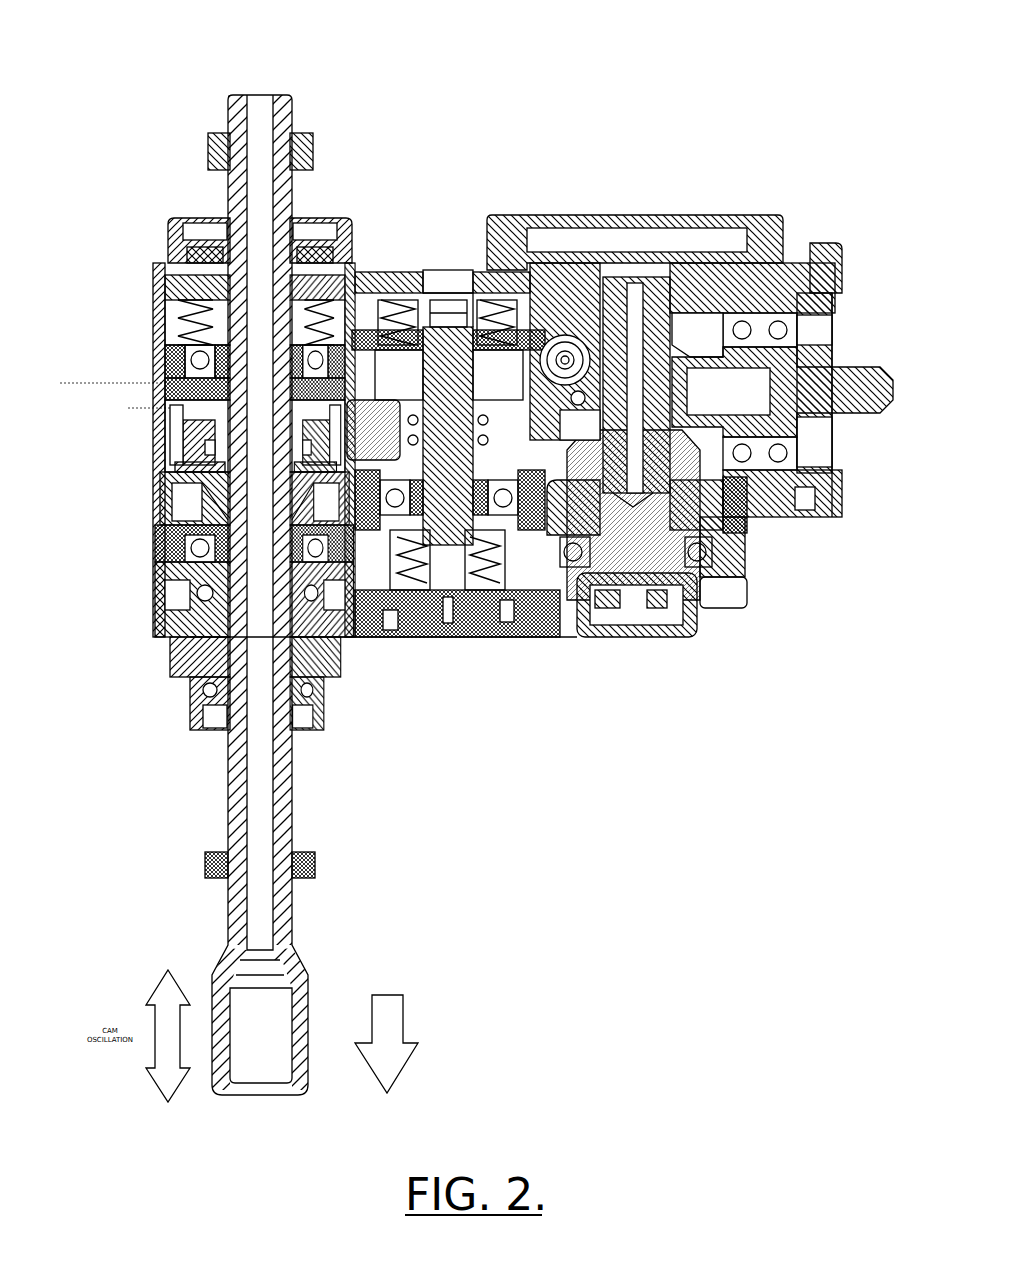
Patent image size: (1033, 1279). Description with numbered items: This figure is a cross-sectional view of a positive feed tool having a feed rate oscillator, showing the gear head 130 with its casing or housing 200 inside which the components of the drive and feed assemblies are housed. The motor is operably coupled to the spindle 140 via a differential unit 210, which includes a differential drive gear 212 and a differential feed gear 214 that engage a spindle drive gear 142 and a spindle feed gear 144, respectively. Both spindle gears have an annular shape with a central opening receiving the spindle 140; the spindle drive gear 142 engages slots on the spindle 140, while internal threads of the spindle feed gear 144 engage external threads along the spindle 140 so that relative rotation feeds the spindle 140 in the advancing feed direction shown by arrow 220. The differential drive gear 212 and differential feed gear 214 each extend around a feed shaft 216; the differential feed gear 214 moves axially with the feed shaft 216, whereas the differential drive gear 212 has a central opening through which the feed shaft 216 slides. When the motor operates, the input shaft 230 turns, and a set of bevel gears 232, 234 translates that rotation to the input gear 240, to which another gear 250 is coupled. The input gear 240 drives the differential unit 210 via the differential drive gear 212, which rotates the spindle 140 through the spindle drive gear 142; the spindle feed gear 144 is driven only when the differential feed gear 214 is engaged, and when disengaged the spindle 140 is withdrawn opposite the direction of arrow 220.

The gear head 130 is at (118, 34).
The spindle 140 is at (238, 820).
The spindle drive gear 142 is at (192, 505).
The spindle feed gear 144 is at (182, 435).
The housing 200 is at (493, 220).
The differential unit 210 is at (488, 684).
The differential drive gear 212 is at (538, 510).
The differential feed gear 214 is at (362, 443).
The feed shaft 216 is at (440, 472).
The arrow 220 is at (388, 1022).
The input shaft 230 is at (846, 379).
The bevel gear 232 is at (692, 453).
The bevel gear 234 is at (692, 457).
The input gear 240 is at (627, 560).
The gear 250 is at (573, 507).